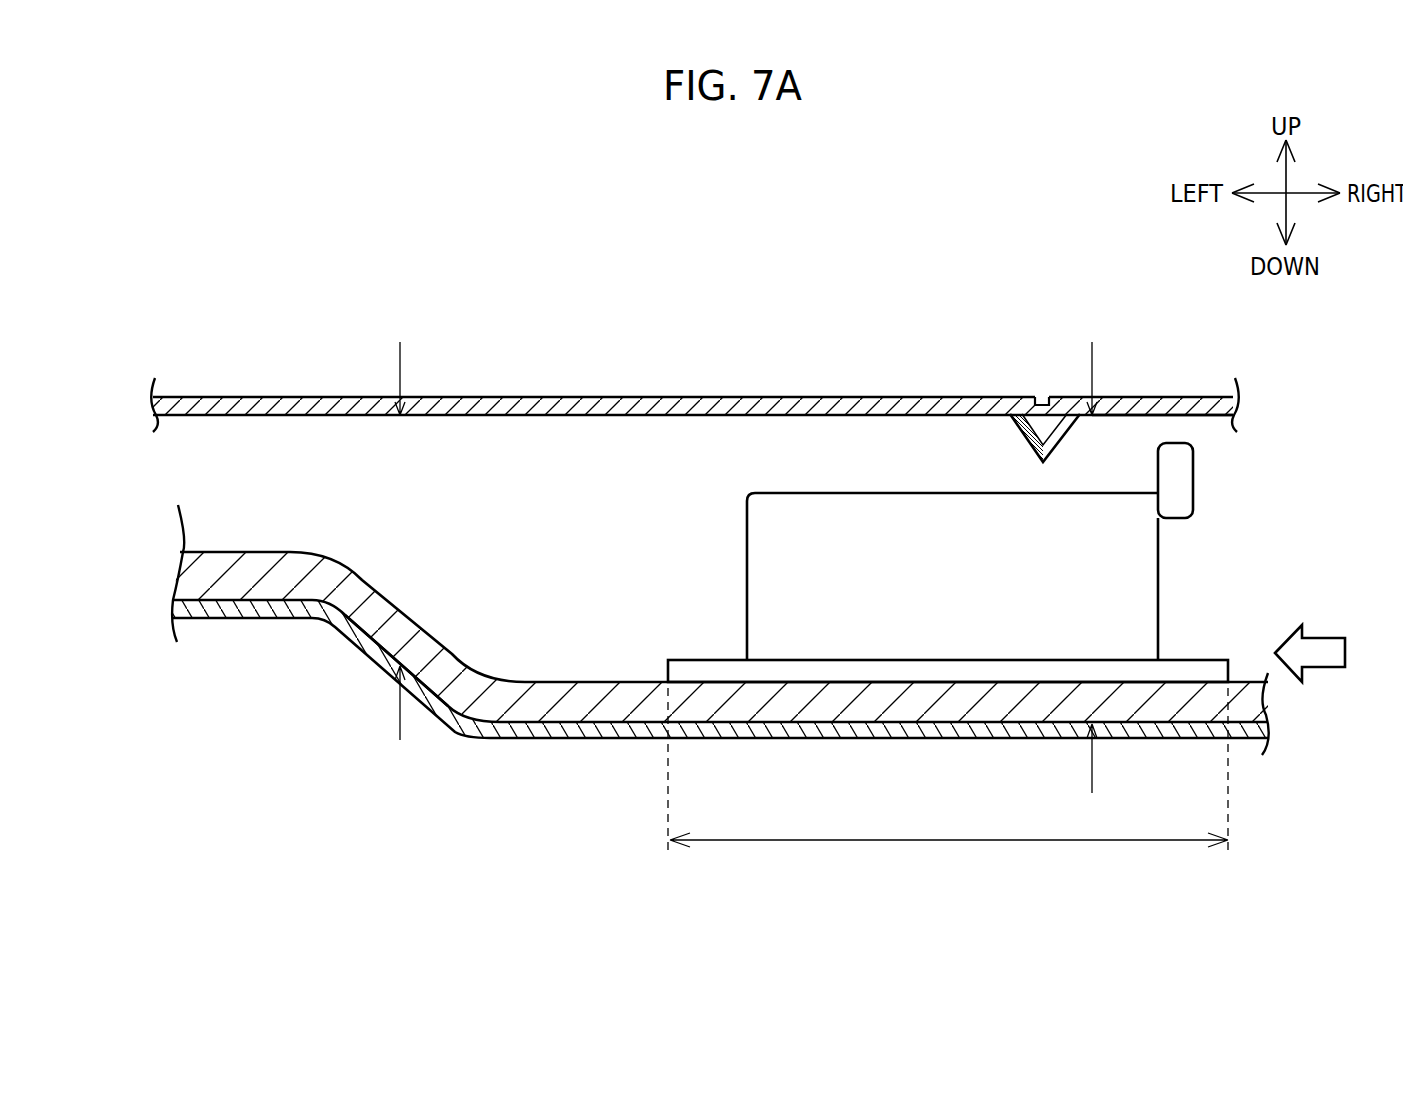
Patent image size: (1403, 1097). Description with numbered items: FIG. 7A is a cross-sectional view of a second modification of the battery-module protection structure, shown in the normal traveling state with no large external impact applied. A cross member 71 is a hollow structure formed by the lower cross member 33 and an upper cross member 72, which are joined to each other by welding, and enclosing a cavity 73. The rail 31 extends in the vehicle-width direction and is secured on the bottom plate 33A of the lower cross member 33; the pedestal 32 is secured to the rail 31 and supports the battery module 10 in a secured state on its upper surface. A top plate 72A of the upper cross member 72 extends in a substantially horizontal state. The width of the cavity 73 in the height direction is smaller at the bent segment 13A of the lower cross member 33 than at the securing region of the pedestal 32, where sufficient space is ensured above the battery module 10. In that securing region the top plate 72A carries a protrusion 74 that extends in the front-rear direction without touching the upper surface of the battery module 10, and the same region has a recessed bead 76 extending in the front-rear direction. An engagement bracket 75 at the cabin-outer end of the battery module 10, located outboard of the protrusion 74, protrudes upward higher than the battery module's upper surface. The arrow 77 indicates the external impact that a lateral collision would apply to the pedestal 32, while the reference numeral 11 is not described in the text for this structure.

The battery module 10 is at (765, 513).
The heating device 11 is at (774, 257).
The bent segment 13A is at (370, 668).
The rail 31 is at (197, 571).
The pedestal 32 is at (683, 667).
The lower cross member 33 is at (490, 745).
The bottom plate 33A is at (270, 607).
The cross member 71 is at (898, 311).
The upper cross member 72 is at (308, 396).
The top plate 72A is at (233, 396).
The cavity 73 is at (1127, 450).
The protrusion 74 is at (1022, 432).
The engagement bracket 75 is at (1178, 480).
The recessed bead 76 is at (1047, 400).
The arrow 77 is at (1322, 661).